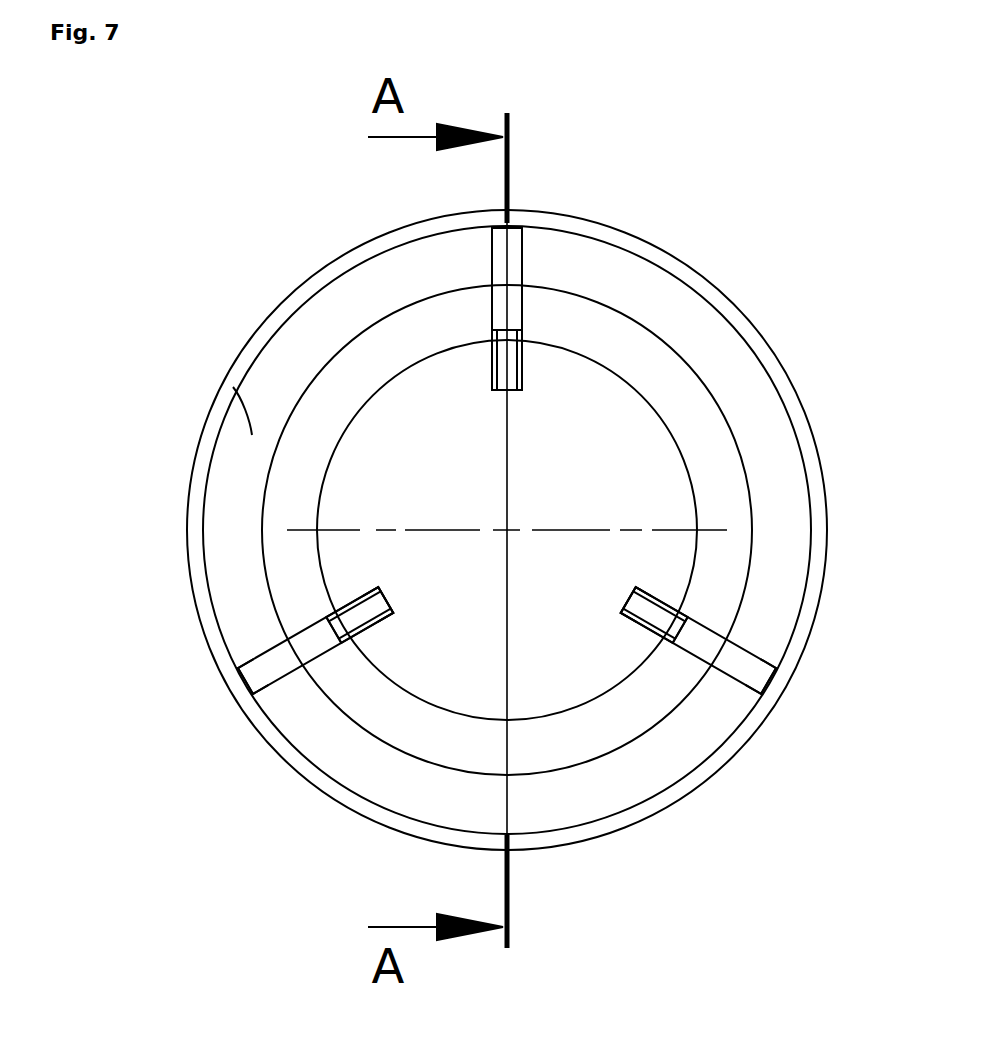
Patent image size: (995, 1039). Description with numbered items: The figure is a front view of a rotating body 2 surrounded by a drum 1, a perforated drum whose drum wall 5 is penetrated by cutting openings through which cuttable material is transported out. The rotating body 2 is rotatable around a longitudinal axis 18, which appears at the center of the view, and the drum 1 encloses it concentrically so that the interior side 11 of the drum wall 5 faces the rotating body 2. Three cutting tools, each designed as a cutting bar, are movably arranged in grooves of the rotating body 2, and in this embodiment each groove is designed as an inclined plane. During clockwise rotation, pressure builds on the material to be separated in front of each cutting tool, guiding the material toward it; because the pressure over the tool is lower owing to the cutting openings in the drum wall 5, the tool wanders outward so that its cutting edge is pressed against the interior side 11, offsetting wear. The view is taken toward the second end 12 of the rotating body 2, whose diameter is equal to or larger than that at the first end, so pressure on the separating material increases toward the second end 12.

The drum 1 is at (745, 328).
The rotating body 2 is at (710, 468).
The drum wall 5 is at (337, 272).
The interior side 11 is at (252, 435).
The second end 12 is at (650, 563).
The longitudinal axis 18 is at (510, 527).